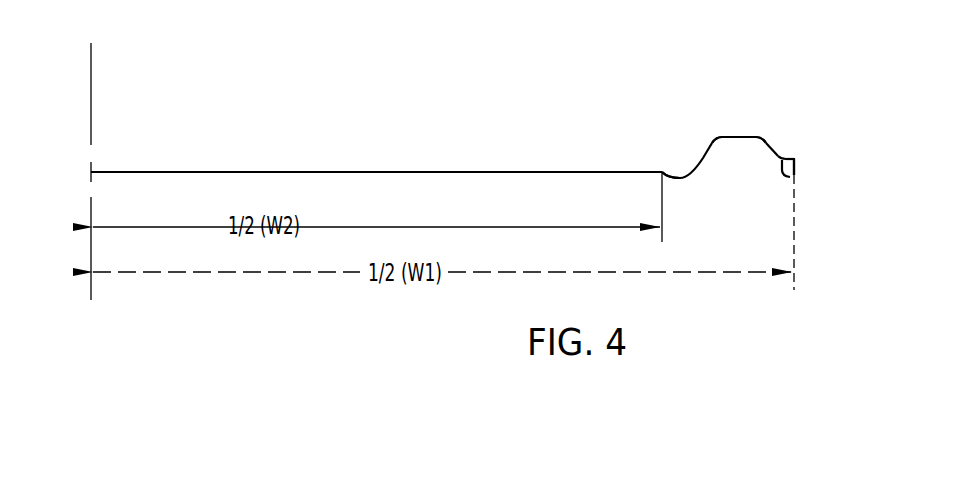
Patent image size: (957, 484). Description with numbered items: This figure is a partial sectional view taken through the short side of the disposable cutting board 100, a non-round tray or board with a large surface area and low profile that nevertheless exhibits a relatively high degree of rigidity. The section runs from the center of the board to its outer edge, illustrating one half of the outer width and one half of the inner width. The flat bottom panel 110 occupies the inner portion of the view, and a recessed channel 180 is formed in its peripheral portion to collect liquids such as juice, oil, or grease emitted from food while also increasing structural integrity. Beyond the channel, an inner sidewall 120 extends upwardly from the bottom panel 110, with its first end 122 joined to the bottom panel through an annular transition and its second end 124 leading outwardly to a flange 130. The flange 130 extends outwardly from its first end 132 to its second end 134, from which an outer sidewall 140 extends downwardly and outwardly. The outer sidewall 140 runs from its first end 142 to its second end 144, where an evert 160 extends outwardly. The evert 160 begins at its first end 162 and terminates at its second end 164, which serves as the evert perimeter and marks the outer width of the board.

The disposable cutting board 100 is at (300, 55).
The bottom panel 110 is at (362, 172).
The inner sidewall 120 is at (705, 158).
The first end of the inner sidewall 122 is at (665, 185).
The second end of the inner sidewall 124 is at (716, 136).
The flange 130 is at (743, 137).
The first end of the flange 132 is at (717, 137).
The second end of the flange 134 is at (758, 137).
The outer sidewall 140 is at (765, 145).
The first end of the outer sidewall 142 is at (764, 139).
The second end of the outer sidewall 144 is at (782, 158).
The evert 160 is at (796, 172).
The first end of the evert 162 is at (792, 178).
The second end of the evert 164 is at (795, 158).
The recessed channel 180 is at (670, 172).